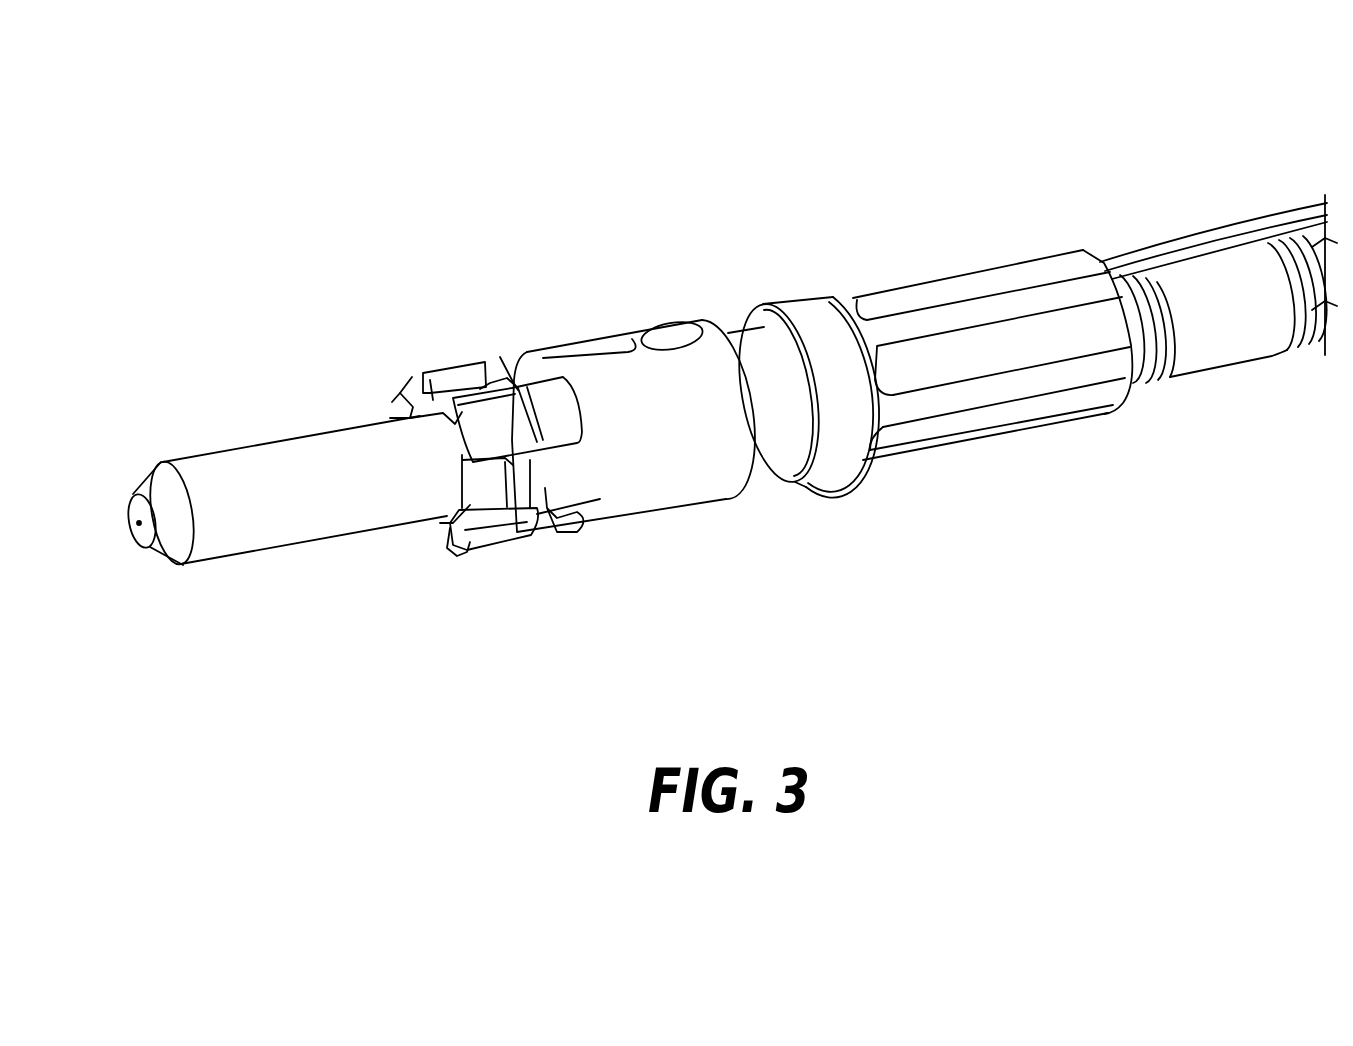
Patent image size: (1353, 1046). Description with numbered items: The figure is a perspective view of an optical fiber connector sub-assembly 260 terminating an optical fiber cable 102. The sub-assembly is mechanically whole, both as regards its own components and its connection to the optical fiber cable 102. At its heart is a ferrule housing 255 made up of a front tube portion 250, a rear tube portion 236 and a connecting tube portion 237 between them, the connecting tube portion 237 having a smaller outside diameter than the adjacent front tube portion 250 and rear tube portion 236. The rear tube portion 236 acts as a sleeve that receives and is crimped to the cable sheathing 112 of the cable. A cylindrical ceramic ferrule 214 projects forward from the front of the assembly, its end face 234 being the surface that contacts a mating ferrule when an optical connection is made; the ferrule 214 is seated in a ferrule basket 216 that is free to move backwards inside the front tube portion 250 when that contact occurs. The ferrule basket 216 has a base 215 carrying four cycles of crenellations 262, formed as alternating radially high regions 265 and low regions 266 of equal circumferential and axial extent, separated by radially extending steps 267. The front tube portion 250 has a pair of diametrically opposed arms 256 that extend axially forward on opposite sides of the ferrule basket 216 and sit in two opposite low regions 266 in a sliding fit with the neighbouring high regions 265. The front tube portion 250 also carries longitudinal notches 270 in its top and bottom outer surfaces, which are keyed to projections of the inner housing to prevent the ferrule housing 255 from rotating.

The optical fiber cable 102 is at (1255, 385).
The cable sheathing 112 is at (1203, 272).
The ferrule 214 is at (245, 533).
The base 215 is at (408, 400).
The ferrule basket 216 is at (520, 555).
The end face 234 is at (128, 513).
The rear tube portion 236 is at (880, 460).
The connecting tube portion 237 is at (767, 467).
The front tube portion 250 is at (633, 408).
The ferrule housing 255 is at (769, 196).
The arms 256 is at (547, 488).
The optical fiber connector sub-assembly 260 is at (940, 188).
The crenellations 262 is at (447, 576).
The high regions 265 is at (428, 377).
The low regions 266 is at (490, 387).
The steps 267 is at (417, 383).
The longitudinal notches 270 is at (597, 350).